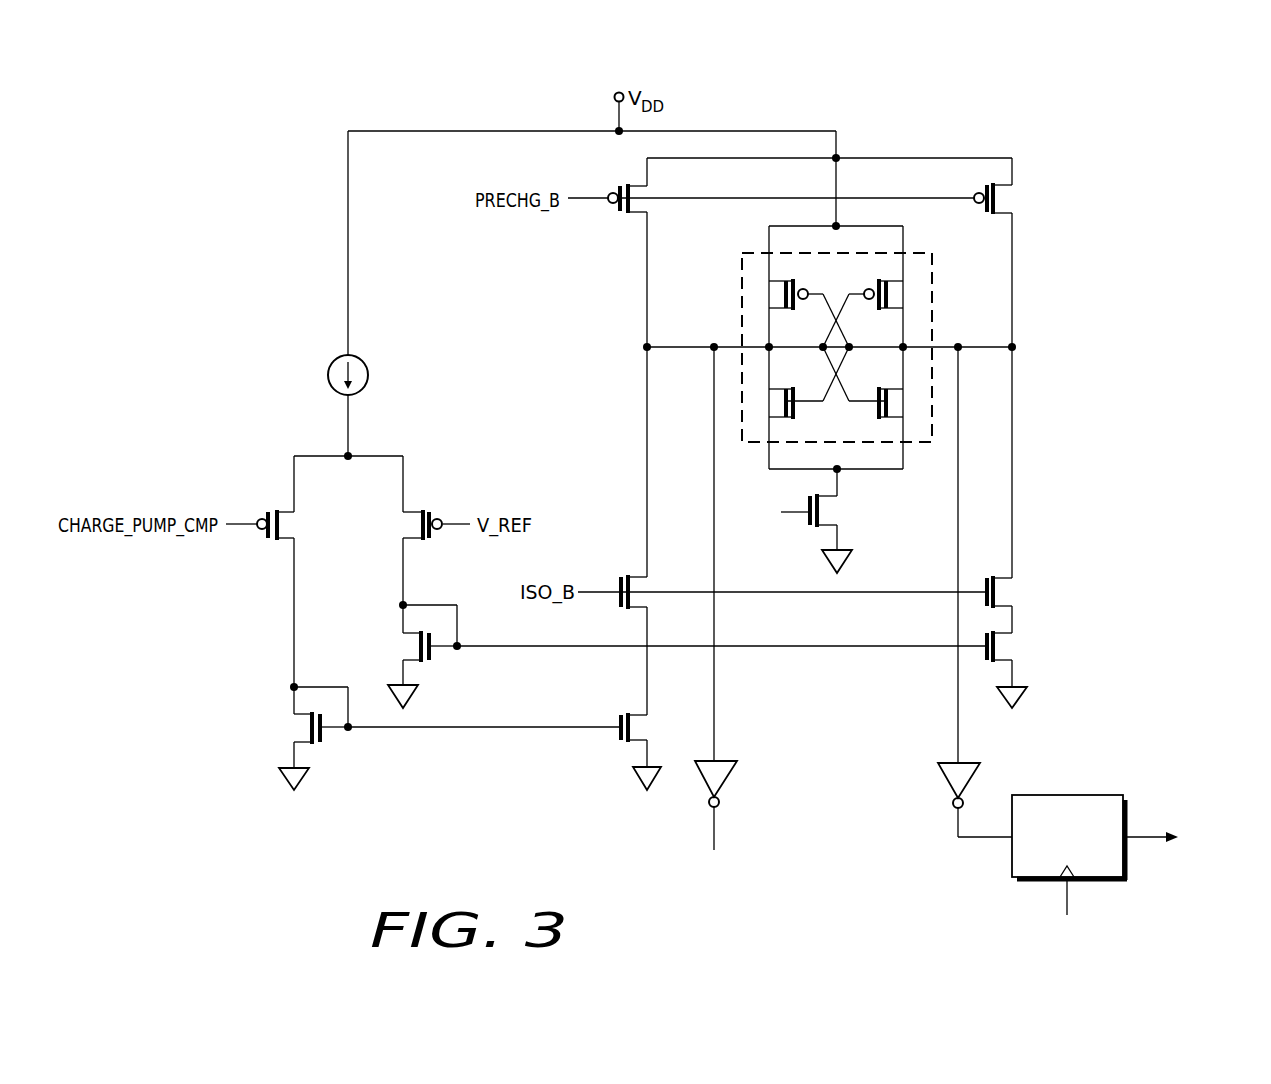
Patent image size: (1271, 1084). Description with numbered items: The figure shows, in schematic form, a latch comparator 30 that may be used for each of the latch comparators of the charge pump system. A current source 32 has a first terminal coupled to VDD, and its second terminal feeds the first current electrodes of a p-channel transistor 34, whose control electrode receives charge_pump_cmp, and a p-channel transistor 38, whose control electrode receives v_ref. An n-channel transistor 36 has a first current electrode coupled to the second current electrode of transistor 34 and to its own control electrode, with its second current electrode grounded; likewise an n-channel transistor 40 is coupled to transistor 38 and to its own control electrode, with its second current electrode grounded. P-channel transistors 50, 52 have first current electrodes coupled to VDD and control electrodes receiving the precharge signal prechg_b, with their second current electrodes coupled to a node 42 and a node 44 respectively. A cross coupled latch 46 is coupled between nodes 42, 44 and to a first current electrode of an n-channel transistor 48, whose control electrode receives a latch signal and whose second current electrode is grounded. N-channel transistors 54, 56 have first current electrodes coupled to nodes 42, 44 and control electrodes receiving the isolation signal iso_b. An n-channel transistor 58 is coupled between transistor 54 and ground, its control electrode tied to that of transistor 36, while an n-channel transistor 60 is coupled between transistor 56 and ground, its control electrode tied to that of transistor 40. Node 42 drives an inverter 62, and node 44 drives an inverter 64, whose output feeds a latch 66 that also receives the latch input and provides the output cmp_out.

The latch comparator 30 is at (1157, 144).
The current source 32 is at (368, 366).
The p-channel transistor 34 is at (284, 526).
The n-channel transistor 36 is at (306, 727).
The p-channel transistor 38 is at (416, 526).
The n-channel transistor 40 is at (416, 646).
The node 42 is at (681, 345).
The node 44 is at (982, 345).
The cross coupled latch 46 is at (934, 278).
The n-channel transistor 48 is at (828, 514).
The p-channel transistor 50 is at (618, 215).
The p-channel transistor 52 is at (1003, 200).
The n-channel transistor 54 is at (615, 575).
The n-channel transistor 56 is at (1003, 594).
The n-channel transistor 58 is at (636, 729).
The n-channel transistor 60 is at (1003, 648).
The inverter 62 is at (738, 778).
The inverter 64 is at (940, 780).
The latch 66 is at (1098, 794).